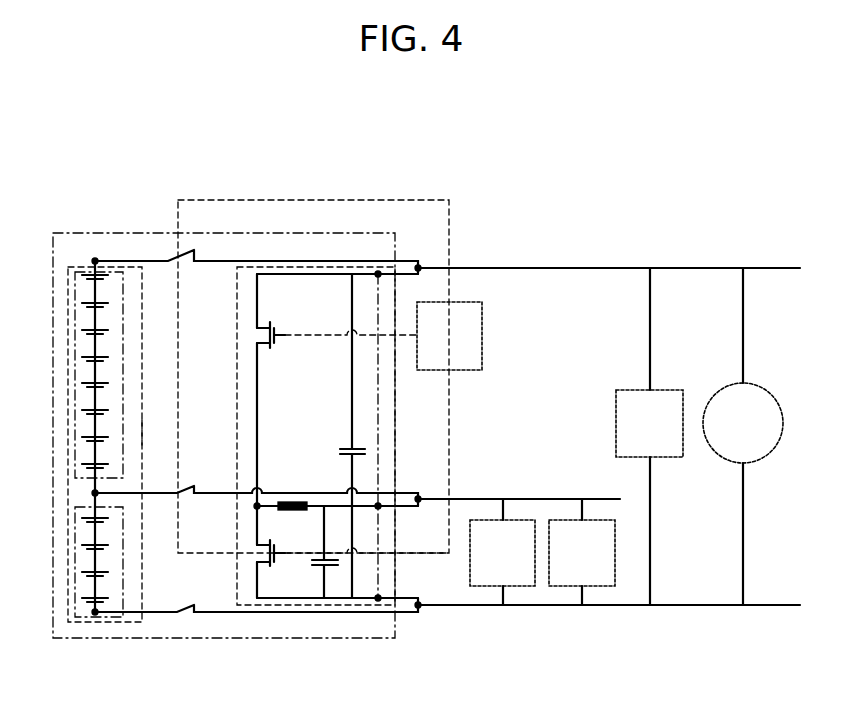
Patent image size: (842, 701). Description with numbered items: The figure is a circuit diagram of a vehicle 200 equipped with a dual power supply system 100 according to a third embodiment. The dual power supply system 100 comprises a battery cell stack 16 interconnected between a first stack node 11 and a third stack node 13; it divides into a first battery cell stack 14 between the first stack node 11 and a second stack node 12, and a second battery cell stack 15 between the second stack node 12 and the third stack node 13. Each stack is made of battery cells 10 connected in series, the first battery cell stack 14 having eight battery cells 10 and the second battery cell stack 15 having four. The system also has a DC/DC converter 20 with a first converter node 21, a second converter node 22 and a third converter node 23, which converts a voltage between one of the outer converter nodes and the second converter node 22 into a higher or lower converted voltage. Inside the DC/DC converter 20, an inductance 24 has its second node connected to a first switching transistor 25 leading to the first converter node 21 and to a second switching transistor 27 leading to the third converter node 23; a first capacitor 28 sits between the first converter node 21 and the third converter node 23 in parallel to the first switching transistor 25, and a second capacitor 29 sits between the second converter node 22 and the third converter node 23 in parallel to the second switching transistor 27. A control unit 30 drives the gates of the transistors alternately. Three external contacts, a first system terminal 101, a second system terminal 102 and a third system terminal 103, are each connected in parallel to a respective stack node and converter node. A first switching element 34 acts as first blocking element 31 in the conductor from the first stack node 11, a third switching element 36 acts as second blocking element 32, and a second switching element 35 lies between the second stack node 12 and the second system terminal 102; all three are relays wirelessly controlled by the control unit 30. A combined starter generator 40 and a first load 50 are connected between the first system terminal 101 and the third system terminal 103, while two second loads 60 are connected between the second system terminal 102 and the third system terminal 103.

The battery cell 10 is at (83, 357).
The first stack node 11 is at (95, 258).
The second stack node 12 is at (90, 493).
The third stack node 13 is at (95, 617).
The first battery cell stack 14 is at (123, 319).
The second battery cell stack 15 is at (123, 555).
The battery cell stack 16 is at (142, 432).
The DC/DC converter 20 is at (237, 345).
The first converter node 21 is at (378, 270).
The second converter node 22 is at (382, 508).
The third converter node 23 is at (377, 602).
The inductance 24 is at (292, 502).
The first switching transistor 25 is at (276, 343).
The second switching transistor 27 is at (268, 553).
The first capacitor 28 is at (348, 448).
The second capacitor 29 is at (318, 566).
The control unit 30 is at (482, 335).
The first blocking element 31 is at (256, 213).
The first switching element 34 is at (190, 248).
The second blocking element 32 is at (256, 642).
The third switching element 36 is at (184, 615).
The second switching element 35 is at (192, 489).
The combined starter generator 40 is at (762, 391).
The first load 50 is at (616, 422).
The second load 60 is at (520, 588).
The dual power supply system 100 is at (315, 232).
The first system terminal 101 is at (421, 266).
The second system terminal 102 is at (420, 497).
The third system terminal 103 is at (420, 608).
The vehicle 200 is at (626, 201).